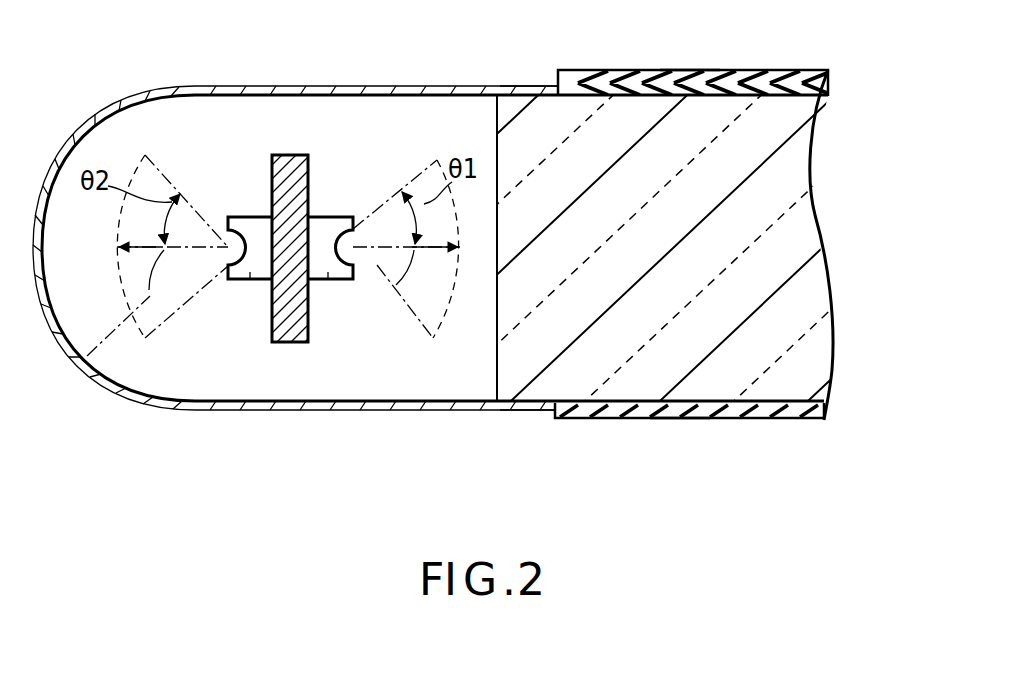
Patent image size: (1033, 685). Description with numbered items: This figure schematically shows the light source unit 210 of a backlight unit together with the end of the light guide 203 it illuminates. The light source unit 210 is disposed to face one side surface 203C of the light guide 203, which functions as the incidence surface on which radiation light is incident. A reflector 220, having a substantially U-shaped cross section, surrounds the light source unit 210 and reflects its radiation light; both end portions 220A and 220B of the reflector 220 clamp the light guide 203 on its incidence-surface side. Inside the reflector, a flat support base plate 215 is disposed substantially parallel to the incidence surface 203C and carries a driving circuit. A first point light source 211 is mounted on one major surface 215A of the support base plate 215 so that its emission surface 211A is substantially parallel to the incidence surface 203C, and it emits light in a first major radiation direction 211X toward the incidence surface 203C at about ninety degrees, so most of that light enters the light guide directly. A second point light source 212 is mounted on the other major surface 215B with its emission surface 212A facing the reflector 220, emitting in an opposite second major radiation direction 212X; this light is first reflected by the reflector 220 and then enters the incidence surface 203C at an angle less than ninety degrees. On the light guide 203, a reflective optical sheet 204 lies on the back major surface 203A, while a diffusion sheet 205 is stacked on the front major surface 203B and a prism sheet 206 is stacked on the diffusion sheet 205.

The light source unit 210 is at (288, 130).
The first point light source 211 is at (331, 283).
The emission surface 211A is at (353, 232).
The first major radiation direction 211X is at (410, 336).
The second point light source 212 is at (238, 283).
The emission surface 212A is at (227, 232).
The second major radiation direction 212X is at (86, 360).
The support base plate 215 is at (290, 343).
The one major surface 215A is at (309, 160).
The other major surface 215B is at (262, 155).
The reflector 220 is at (196, 85).
The end portion of reflector 220A is at (528, 411).
The end portion of reflector 220B is at (522, 86).
The light guide 203 is at (788, 170).
The major surface (back surface) 203A is at (680, 419).
The major surface (front surface) 203B is at (683, 77).
The side surface (incidence surface) 203C is at (496, 343).
The optical sheet 204 is at (778, 420).
The optical sheet 205 is at (828, 90).
The optical sheet 206 is at (826, 72).